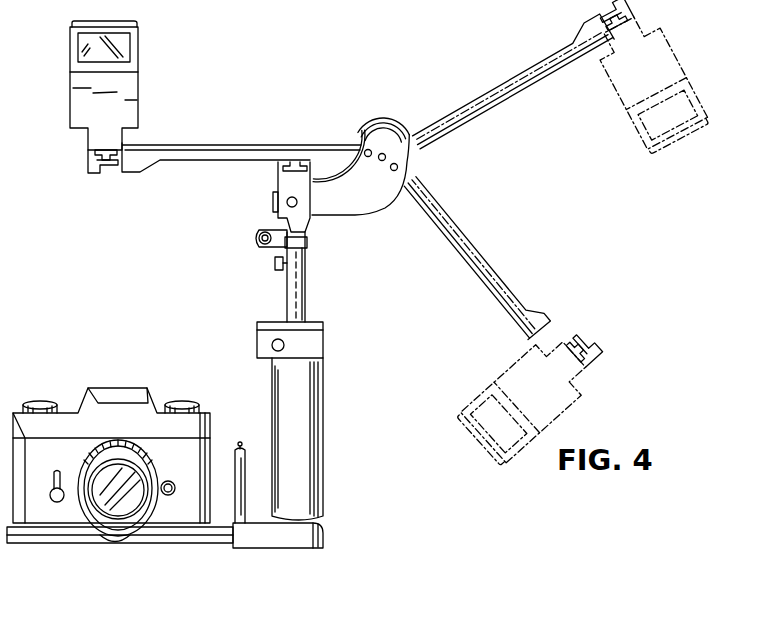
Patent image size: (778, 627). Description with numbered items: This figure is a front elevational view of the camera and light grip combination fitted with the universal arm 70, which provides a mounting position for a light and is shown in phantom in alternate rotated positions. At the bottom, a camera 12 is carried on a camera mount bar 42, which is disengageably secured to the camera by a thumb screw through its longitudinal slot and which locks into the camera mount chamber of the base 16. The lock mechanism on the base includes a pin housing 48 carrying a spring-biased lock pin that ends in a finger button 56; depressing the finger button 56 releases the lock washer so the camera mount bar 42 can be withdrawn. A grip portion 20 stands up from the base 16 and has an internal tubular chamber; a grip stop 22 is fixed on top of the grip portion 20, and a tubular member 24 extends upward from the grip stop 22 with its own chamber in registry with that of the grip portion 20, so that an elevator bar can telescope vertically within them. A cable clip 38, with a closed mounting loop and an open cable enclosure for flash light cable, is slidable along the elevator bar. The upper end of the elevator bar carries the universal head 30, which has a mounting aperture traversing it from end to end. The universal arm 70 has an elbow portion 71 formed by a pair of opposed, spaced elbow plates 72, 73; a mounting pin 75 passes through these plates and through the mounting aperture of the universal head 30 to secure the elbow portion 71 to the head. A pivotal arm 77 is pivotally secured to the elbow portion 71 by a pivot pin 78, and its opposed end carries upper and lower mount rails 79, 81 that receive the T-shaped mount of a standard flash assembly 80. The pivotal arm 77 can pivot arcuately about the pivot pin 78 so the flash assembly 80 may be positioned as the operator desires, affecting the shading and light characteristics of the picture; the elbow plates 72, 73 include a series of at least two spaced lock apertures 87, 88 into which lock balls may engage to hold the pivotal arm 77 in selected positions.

The camera 12 is at (120, 464).
The base 16 is at (324, 530).
The grip portion 20 is at (324, 414).
The grip stop 22 is at (325, 338).
The tubular member 24 is at (306, 300).
The universal head 30 is at (258, 197).
The cable clip 38 is at (252, 242).
The camera mount bar 42 is at (163, 545).
The pin housing 48 is at (247, 455).
The finger button 56 is at (239, 442).
The universal arm 70 is at (405, 158).
The elbow portion 71 is at (362, 219).
The elbow plate 72 is at (409, 152).
The elbow plate 73 is at (398, 122).
The mounting pin 75 is at (287, 203).
The pivotal arm 77 is at (213, 143).
The pivot pin 78 is at (384, 161).
The upper mount rail 79 is at (105, 150).
The flash assembly 80 is at (92, 20).
The lower mount rail 81 is at (103, 168).
The lock aperture 87 is at (366, 149).
The lock aperture 88 is at (398, 168).